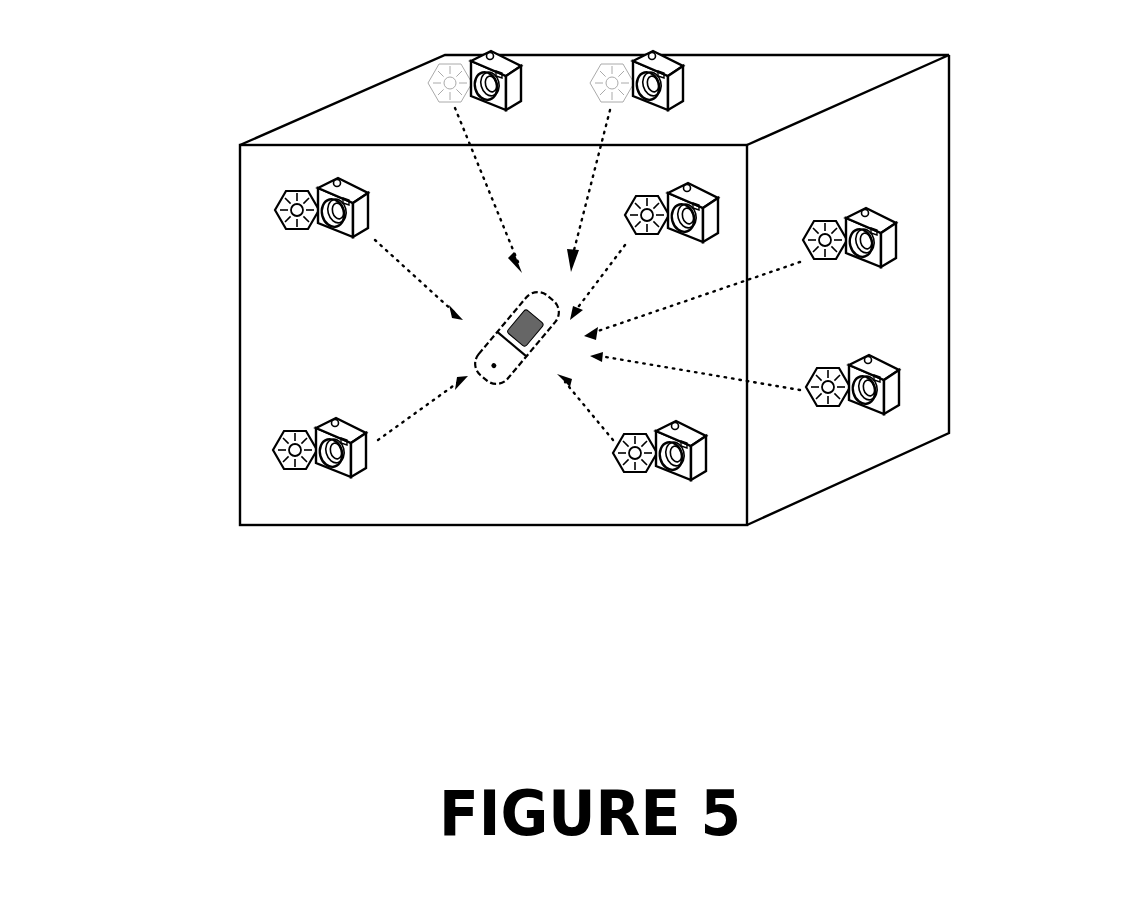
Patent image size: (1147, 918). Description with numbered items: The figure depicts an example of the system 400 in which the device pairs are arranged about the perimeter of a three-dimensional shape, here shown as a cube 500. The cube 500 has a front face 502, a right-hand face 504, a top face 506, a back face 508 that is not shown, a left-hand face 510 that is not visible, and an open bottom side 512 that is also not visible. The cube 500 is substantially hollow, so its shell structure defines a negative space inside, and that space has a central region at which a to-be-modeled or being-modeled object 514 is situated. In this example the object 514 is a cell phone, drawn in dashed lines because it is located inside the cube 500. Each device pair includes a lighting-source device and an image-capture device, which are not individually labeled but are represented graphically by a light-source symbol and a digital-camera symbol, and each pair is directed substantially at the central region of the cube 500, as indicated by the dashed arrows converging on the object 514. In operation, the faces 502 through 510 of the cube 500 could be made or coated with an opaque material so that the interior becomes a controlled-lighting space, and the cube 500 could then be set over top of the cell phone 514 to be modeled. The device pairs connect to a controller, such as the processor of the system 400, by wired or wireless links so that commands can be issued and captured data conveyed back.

The system 400 is at (1096, 738).
The cube 500 is at (294, 121).
The front face 502 is at (493, 335).
The right-hand face 504 is at (848, 290).
The top face 506 is at (594, 100).
The back face 508 is at (972, 225).
The left-hand face 510 is at (232, 331).
The open bottom side 512 is at (494, 547).
The object 514 is at (504, 374).